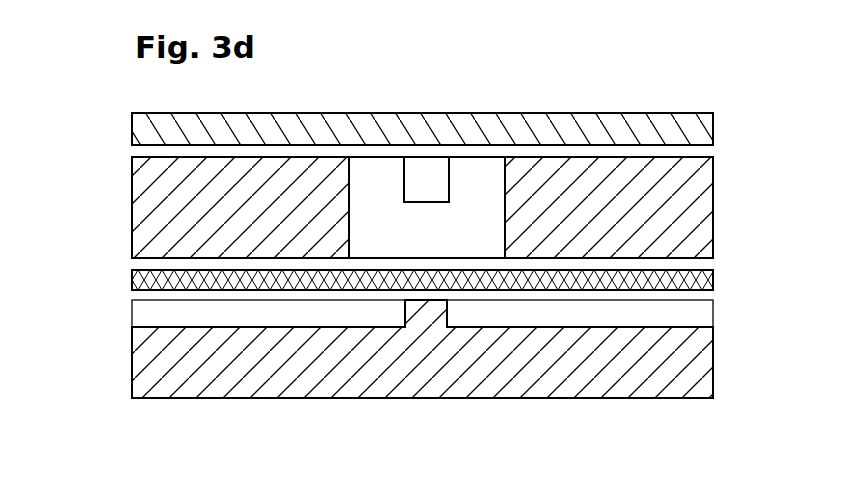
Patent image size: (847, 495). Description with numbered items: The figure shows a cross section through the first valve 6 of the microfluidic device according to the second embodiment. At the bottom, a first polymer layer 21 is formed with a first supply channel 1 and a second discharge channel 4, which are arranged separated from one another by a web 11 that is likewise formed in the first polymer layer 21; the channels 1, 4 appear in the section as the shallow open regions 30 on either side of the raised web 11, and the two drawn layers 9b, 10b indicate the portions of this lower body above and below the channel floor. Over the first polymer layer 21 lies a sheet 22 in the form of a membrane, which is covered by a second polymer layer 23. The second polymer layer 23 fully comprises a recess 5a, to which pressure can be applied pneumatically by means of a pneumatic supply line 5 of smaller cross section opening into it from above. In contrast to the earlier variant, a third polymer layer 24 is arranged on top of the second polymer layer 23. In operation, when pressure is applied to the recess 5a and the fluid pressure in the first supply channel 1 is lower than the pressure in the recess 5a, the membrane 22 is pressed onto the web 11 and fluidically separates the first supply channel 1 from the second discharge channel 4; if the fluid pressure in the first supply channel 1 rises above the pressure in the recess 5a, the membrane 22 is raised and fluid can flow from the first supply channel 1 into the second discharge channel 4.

The first supply channel 1 is at (207, 312).
The second discharge channel 4 is at (586, 310).
The pneumatic supply line 5 is at (432, 180).
The recess 5a is at (492, 182).
The first valve 6 is at (105, 180).
The first layer of substrate 9b is at (122, 315).
The second layer of substrate 10b is at (122, 315).
The web 11 is at (425, 312).
The first polymer layer 21 is at (698, 382).
The membrane 22 is at (710, 273).
The second polymer layer 23 is at (700, 198).
The third polymer layer 24 is at (700, 130).
The recess 30 is at (700, 322).